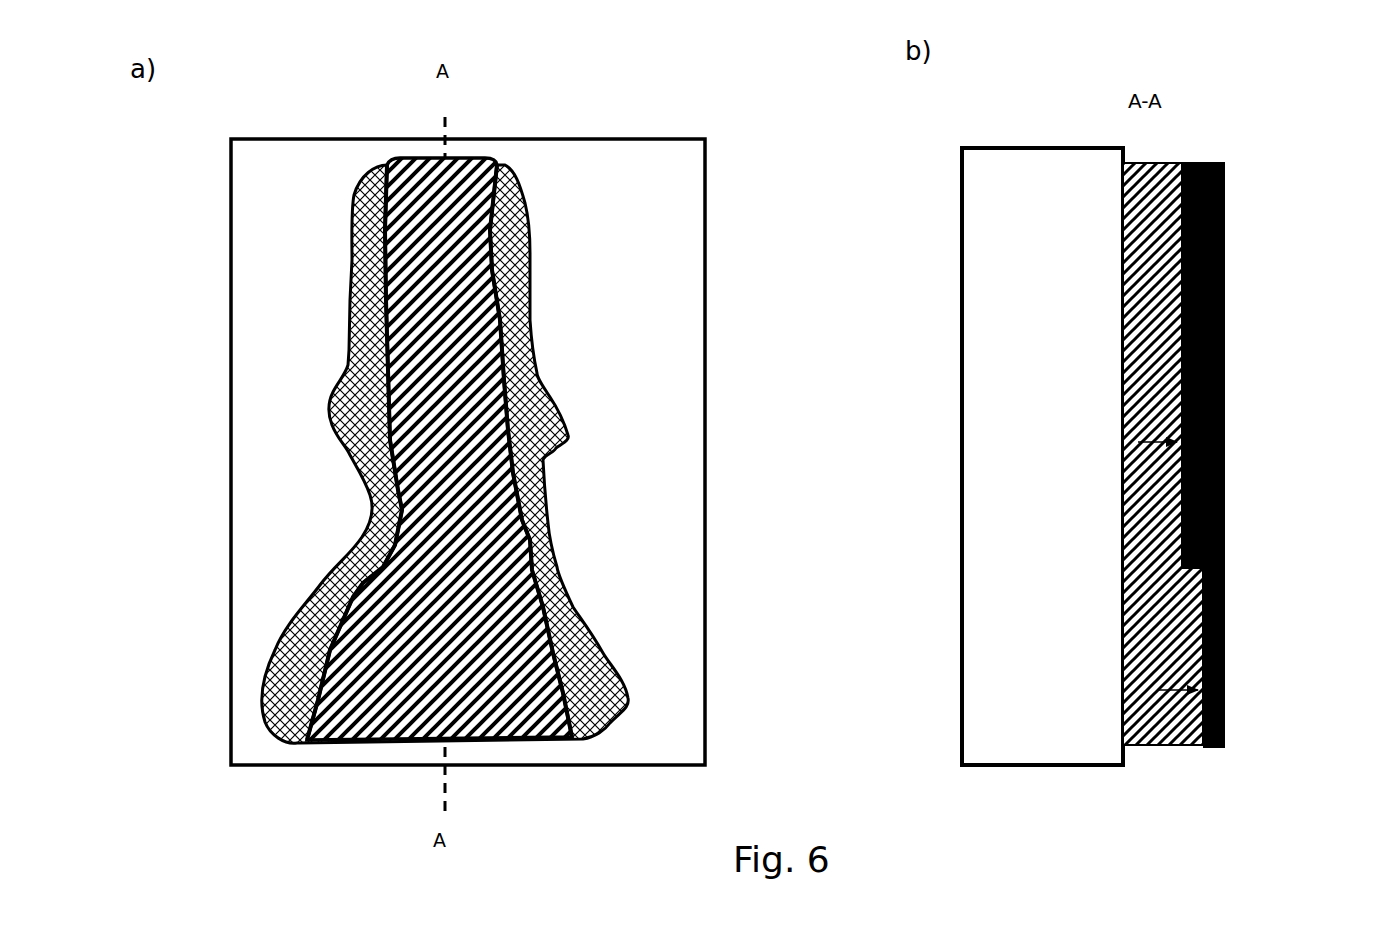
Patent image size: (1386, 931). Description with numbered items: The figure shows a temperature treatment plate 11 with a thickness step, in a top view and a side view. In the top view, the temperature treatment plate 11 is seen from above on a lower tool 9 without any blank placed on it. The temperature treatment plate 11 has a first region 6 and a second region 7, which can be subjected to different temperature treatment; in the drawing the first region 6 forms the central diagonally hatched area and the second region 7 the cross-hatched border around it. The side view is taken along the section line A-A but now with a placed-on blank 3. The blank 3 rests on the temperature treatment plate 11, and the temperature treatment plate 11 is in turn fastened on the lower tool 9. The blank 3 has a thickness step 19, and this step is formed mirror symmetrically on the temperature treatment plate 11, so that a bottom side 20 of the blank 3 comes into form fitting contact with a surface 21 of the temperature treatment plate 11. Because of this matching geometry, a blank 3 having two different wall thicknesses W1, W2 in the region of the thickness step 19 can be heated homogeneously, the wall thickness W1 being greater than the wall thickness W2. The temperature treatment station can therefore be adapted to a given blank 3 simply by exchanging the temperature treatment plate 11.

In FIG. 6b, the blank 3 is at (1222, 146).
In FIG. 6a, the first region 6 is at (457, 162).
In FIG. 6a, the second region 7 is at (350, 273).
In FIG. 6a, the lower tool 9 is at (597, 170).
In FIG. 6b, the lower tool 9 is at (1043, 180).
In FIG. 6a, the temperature treatment plate 11 is at (384, 163).
In FIG. 6b, the temperature treatment plate 11 is at (1170, 745).
In FIG. 6b, the thickness step 19 is at (1238, 565).
In FIG. 6b, the bottom side 20 is at (1167, 222).
In FIG. 6a, the surface 21 is at (380, 386).
In FIG. 6b, the surface 21 is at (1213, 751).
In FIG. 6b, the wall thickness W1 is at (1228, 442).
In FIG. 6b, the wall thickness W2 is at (1228, 690).